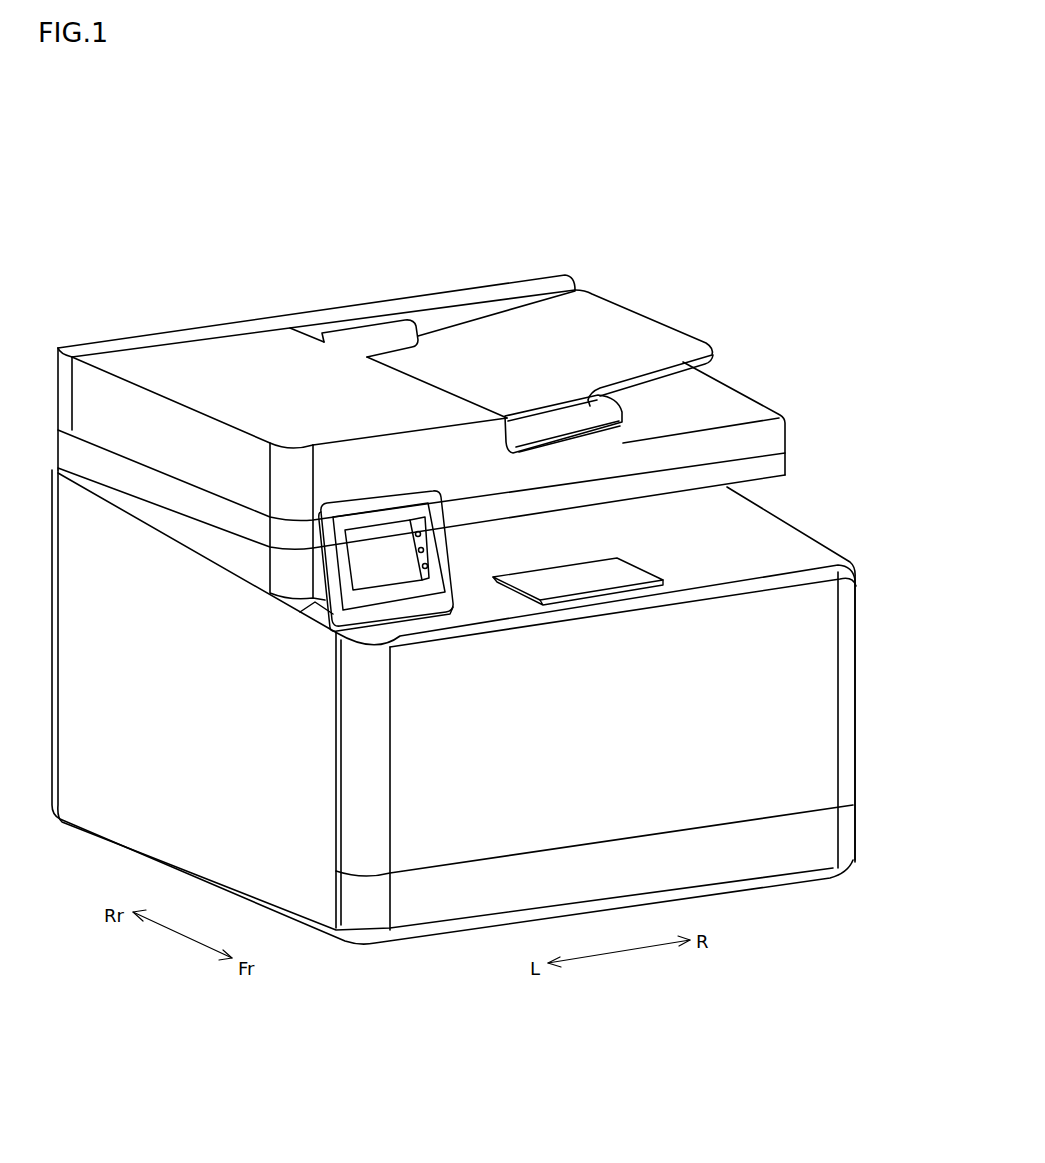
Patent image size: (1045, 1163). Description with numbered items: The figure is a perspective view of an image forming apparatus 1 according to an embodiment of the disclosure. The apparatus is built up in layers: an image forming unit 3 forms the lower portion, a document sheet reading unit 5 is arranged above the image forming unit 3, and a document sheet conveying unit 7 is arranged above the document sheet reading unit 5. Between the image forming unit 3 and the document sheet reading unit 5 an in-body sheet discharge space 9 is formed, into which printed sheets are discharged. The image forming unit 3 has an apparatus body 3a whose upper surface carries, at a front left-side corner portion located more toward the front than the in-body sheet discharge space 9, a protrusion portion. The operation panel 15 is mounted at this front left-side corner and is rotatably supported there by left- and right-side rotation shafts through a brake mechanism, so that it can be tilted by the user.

The image forming apparatus 1 is at (432, 194).
The image forming unit 3 is at (862, 588).
The apparatus body 3a is at (857, 690).
The document sheet reading unit 5 is at (789, 463).
The document sheet conveying unit 7 is at (789, 427).
The in-body sheet discharge space 9 is at (675, 527).
The operation panel 15 is at (355, 494).